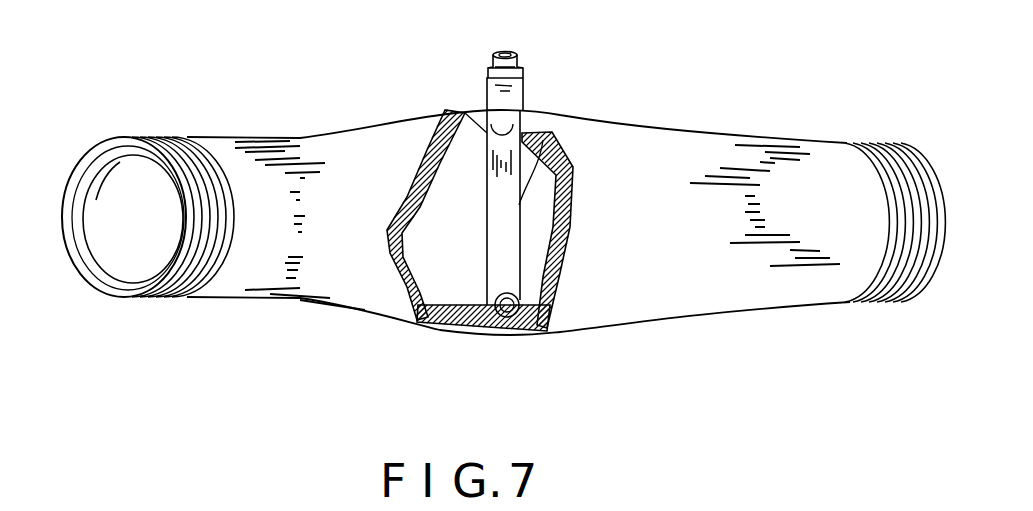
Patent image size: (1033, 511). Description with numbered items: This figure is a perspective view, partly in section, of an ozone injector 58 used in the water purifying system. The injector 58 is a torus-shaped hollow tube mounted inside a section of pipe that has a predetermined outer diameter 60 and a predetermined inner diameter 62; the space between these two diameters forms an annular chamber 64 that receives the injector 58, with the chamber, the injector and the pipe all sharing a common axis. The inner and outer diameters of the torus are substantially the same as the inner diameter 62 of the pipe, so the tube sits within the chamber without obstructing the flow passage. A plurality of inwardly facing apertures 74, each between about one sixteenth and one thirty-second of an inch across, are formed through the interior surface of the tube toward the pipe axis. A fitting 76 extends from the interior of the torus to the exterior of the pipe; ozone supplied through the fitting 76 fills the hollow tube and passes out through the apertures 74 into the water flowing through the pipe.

The injector 58 is at (549, 133).
The outer diameter 60 is at (483, 335).
The inner diameter 62 is at (436, 294).
The annular chamber 64 is at (527, 325).
The inwardly facing apertures 74 is at (517, 277).
The fitting 76 is at (490, 82).